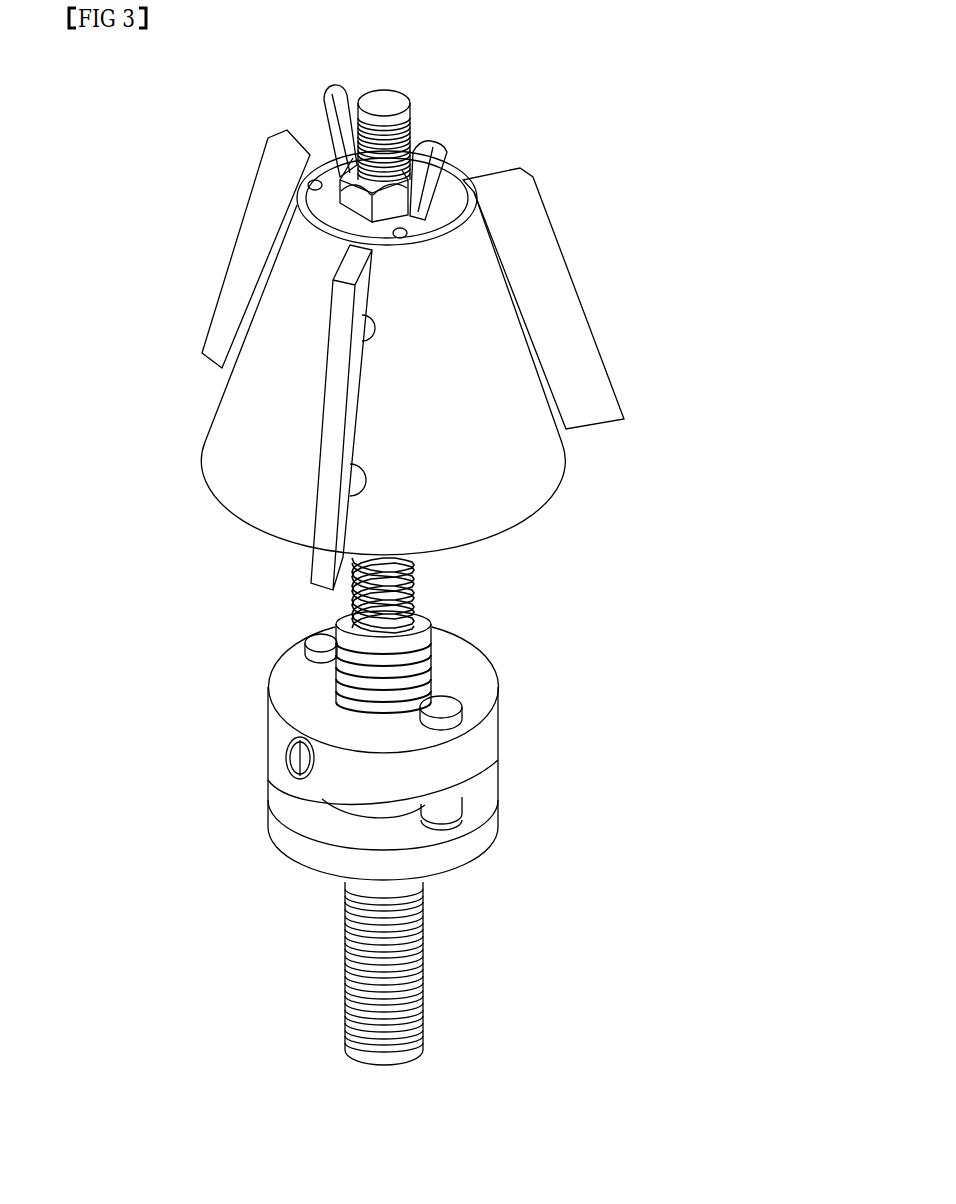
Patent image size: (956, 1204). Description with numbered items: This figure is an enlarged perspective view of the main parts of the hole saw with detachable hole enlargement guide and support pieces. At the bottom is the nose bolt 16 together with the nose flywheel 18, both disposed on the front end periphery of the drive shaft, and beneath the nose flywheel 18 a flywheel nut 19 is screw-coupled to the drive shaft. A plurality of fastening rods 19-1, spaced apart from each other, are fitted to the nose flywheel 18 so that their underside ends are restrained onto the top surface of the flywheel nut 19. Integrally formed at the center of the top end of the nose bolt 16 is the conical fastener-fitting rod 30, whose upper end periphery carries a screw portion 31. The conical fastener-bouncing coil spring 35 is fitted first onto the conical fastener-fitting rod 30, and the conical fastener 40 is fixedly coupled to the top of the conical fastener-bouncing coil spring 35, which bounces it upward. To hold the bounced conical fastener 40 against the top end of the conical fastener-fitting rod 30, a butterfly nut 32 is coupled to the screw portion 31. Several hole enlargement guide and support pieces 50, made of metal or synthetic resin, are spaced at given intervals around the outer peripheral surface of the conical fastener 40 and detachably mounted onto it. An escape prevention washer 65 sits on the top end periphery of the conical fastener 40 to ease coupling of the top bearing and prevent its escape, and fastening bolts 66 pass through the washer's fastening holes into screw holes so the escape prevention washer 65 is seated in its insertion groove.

The nose bolt 16 is at (423, 963).
The nose flywheel 18 is at (482, 742).
The flywheel nut 19 is at (298, 847).
The fastening rods 19-1 is at (323, 643).
The conical fastener-fitting rod 30 is at (385, 635).
The screw portion 31 is at (407, 127).
The butterfly nut 32 is at (328, 108).
The conical fastener-bouncing coil spring 35 is at (417, 572).
The conical fastener 40 is at (495, 483).
The hole enlargement guide and support pieces 50 is at (253, 229).
The escape prevention washer 65 is at (450, 192).
The fastening bolts 66 is at (310, 184).